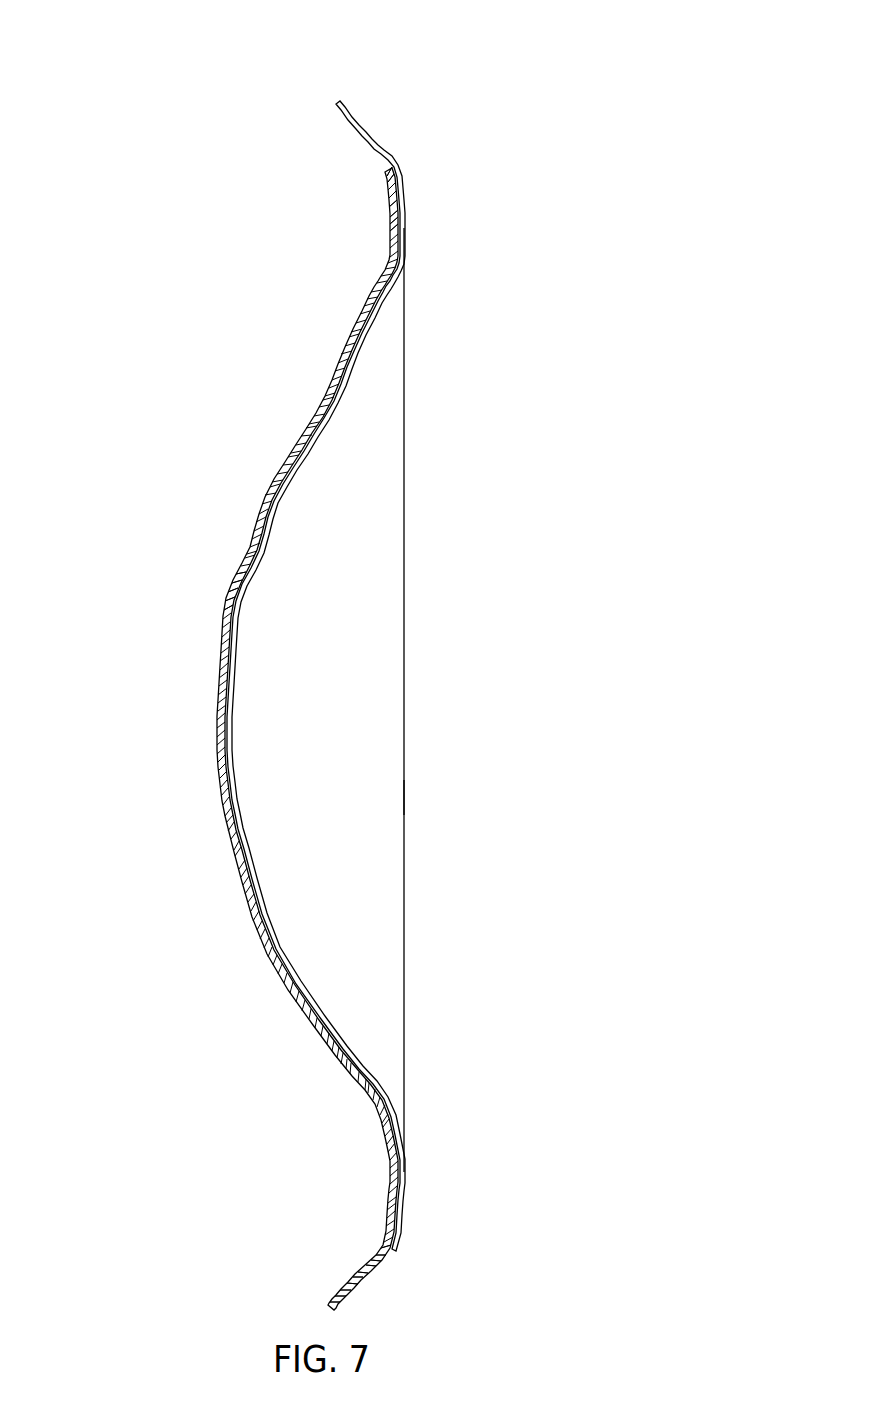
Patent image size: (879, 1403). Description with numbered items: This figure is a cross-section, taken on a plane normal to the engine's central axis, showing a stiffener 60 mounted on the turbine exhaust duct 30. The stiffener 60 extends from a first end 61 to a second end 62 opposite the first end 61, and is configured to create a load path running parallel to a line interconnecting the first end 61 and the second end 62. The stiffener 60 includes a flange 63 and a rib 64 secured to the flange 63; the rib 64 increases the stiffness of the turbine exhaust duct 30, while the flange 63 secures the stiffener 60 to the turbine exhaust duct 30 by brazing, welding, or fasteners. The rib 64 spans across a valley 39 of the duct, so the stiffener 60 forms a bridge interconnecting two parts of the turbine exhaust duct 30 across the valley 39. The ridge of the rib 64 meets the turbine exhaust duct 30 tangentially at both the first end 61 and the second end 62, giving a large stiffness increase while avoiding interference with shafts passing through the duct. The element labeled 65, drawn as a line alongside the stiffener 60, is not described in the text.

The bow limb assembly 30 is at (325, 655).
The limb body 39 is at (155, 585).
The chord line 60 is at (433, 630).
The first end portion 61 is at (414, 156).
The second end portion 62 is at (412, 1253).
The hatched layer 63 is at (226, 712).
The thin layer 64 is at (275, 805).
The reference plane 65 is at (405, 798).